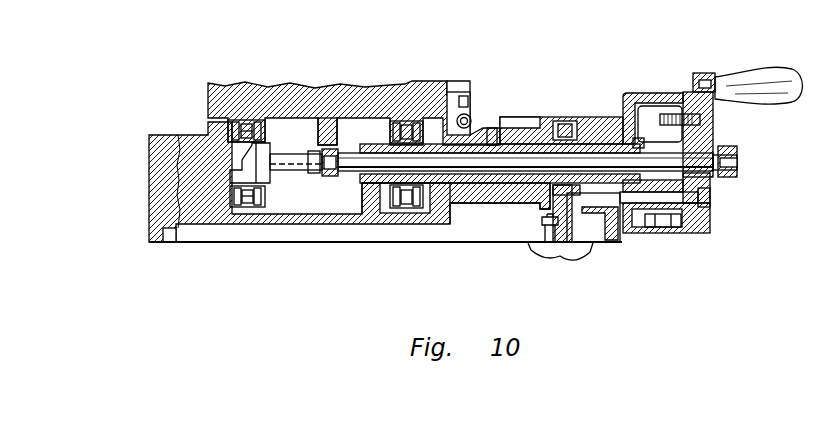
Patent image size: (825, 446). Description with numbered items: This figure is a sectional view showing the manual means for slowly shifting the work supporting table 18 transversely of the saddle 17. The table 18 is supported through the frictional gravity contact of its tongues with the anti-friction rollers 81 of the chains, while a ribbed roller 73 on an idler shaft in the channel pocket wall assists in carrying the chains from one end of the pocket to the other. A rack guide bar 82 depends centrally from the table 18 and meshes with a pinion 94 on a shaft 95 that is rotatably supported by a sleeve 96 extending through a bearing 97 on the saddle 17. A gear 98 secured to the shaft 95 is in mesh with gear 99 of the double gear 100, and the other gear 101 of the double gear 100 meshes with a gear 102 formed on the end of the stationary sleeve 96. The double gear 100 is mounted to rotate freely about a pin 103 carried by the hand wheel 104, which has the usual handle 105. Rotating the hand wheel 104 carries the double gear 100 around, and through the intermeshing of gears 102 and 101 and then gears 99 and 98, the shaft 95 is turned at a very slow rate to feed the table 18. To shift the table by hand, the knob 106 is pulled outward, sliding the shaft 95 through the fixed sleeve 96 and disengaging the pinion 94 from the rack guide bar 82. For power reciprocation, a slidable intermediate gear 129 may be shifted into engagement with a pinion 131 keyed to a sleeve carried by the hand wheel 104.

The saddle 17 is at (420, 224).
The work supporting table 18 is at (318, 94).
The ribbed roller 73 is at (276, 167).
The rollers 81 is at (272, 196).
The rack guide bar 82 is at (337, 131).
The pinion 94 is at (333, 180).
The shaft 95 is at (590, 160).
The sleeve 96 is at (490, 190).
The bearing 97 is at (525, 195).
The gear 98 is at (708, 135).
The gear 99 is at (694, 233).
The double gear 100 is at (664, 228).
The gear 101 is at (616, 238).
The gear 102 is at (643, 138).
The pin 103 is at (710, 197).
The hand wheel 104 is at (668, 93).
The handle 105 is at (766, 80).
The knob 106 is at (738, 152).
The intermediate gear 129 is at (566, 250).
The pinion 131 is at (590, 117).